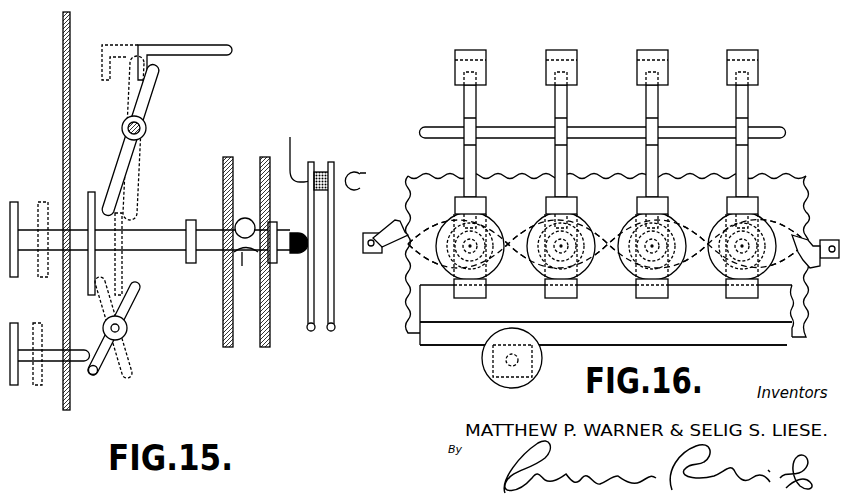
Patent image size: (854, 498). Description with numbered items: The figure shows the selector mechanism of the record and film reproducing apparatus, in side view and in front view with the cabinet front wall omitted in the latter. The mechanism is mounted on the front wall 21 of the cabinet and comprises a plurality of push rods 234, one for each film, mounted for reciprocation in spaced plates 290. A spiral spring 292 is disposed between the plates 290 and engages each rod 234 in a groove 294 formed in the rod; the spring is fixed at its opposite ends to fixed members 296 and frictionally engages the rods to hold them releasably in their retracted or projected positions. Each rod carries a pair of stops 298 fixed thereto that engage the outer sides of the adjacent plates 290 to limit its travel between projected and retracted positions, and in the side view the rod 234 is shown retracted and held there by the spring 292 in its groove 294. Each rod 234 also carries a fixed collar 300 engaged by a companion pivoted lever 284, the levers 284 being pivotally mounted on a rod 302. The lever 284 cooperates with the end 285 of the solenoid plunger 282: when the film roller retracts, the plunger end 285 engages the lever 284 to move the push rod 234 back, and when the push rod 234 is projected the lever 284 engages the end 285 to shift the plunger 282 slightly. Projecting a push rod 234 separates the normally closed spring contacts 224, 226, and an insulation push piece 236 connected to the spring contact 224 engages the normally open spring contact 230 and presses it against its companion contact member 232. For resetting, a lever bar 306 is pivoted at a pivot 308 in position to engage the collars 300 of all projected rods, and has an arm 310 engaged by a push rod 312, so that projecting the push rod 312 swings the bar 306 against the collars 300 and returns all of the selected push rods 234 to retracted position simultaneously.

In FIG. 15, the front wall 21 is at (63, 74).
In FIG. 15, the solenoid plunger 282 is at (197, 46).
In FIG. 15, the pivoted lever 284 is at (152, 93).
In FIG. 16, the pivoted lever 284 is at (473, 127).
In FIG. 15, the plunger end 285 is at (139, 49).
In FIG. 16, the plunger end 285 is at (457, 66).
In FIG. 15, the push rod 234 is at (29, 233).
In FIG. 15, the fixed collar 300 is at (91, 192).
In FIG. 16, the fixed collar 300 is at (478, 203).
In FIG. 15, the stops 298 is at (190, 220).
In FIG. 15, the spiral spring 292 is at (244, 218).
In FIG. 16, the spiral spring 292 is at (601, 256).
In FIG. 15, the groove 294 is at (242, 266).
In FIG. 15, the spaced plates 290 is at (263, 307).
In FIG. 16, the spaced plates 290 is at (408, 305).
In FIG. 15, the spring contact 226 is at (287, 153).
In FIG. 15, the spring contact 224 is at (312, 162).
In FIG. 15, the insulation push piece 236 is at (323, 172).
In FIG. 15, the contact member 232 is at (362, 172).
In FIG. 15, the spring contact 230 is at (333, 300).
In FIG. 15, the push rod 312 is at (53, 352).
In FIG. 15, the lever bar 306 is at (133, 311).
In FIG. 16, the lever bar 306 is at (442, 332).
In FIG. 15, the pivot 308 is at (118, 332).
In FIG. 15, the arm 310 is at (95, 374).
In FIG. 16, the arm 310 is at (490, 377).
In FIG. 16, the rod 302 is at (441, 127).
In FIG. 16, the fixed members 296 is at (371, 232).